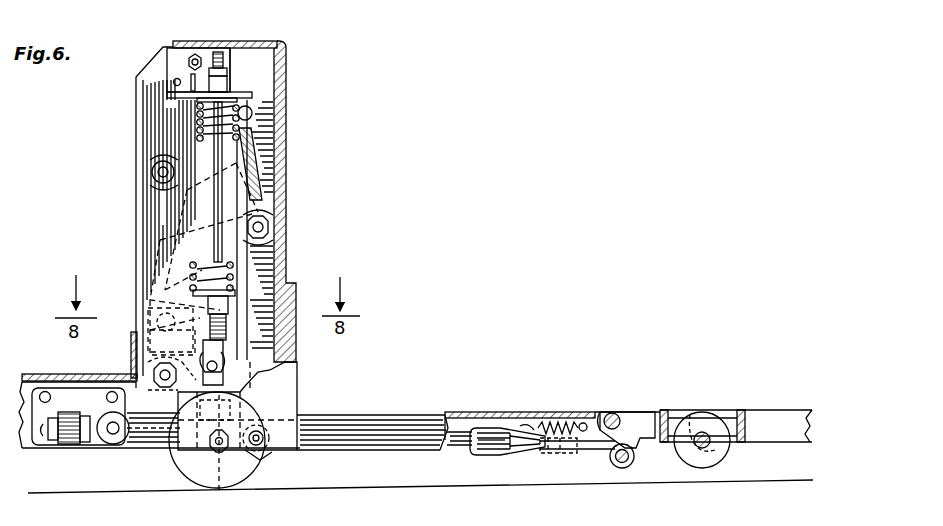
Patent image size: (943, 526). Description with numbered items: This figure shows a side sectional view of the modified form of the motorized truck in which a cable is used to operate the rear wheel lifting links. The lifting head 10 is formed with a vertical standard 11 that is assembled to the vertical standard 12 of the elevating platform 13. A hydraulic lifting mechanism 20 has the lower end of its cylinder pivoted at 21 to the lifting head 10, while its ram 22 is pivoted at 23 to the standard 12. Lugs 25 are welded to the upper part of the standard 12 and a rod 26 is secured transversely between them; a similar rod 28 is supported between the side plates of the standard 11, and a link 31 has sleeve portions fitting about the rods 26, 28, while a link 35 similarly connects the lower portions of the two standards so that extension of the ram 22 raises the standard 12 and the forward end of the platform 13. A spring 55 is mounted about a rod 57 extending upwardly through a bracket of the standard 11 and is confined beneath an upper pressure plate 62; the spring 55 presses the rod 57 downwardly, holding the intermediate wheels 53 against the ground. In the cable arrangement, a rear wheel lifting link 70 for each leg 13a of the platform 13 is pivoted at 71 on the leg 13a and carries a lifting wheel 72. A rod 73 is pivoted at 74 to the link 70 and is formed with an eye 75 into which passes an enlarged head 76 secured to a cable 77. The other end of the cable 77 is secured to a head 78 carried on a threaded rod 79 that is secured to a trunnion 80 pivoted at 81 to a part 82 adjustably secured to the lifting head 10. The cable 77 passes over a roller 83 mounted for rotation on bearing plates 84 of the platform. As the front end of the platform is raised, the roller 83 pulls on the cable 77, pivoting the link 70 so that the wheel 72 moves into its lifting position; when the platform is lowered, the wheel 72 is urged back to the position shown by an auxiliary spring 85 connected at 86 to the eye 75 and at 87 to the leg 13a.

The lifting head 10 is at (193, 338).
The vertical standard 11 is at (136, 140).
The vertical standard 12 is at (287, 197).
The elevating platform 13 is at (400, 413).
The leg 13a is at (500, 412).
The hydraulic lifting mechanism 20 is at (165, 220).
The pivot 21 is at (150, 304).
The ram 22 is at (256, 143).
The pivot 23 is at (252, 110).
The lugs 25 is at (265, 262).
The rod 26 is at (270, 228).
The rod 28 is at (158, 168).
The link 31 is at (150, 193).
The link 35 is at (131, 355).
The intermediate wheels 53 is at (243, 478).
The spring 55 is at (197, 123).
The rod 57 is at (214, 240).
The upper pressure plate 62 is at (197, 101).
The rear wheel lifting link 70 is at (636, 418).
The pivot 71 is at (612, 412).
The lifting wheel 72 is at (697, 462).
The rod 73 is at (590, 451).
The pivot 74 is at (622, 468).
The eye 75 is at (498, 456).
The enlarged head 76 is at (487, 437).
The cable 77 is at (458, 432).
The head 78 is at (219, 460).
The rod 79 is at (200, 452).
The trunnion 80 is at (155, 438).
The pivot 81 is at (113, 432).
The part 82 is at (98, 440).
The roller 83 is at (265, 455).
The bearing plates 84 is at (272, 368).
The auxiliary springs 85 is at (556, 424).
The connection 86 is at (524, 428).
The connection 87 is at (583, 423).